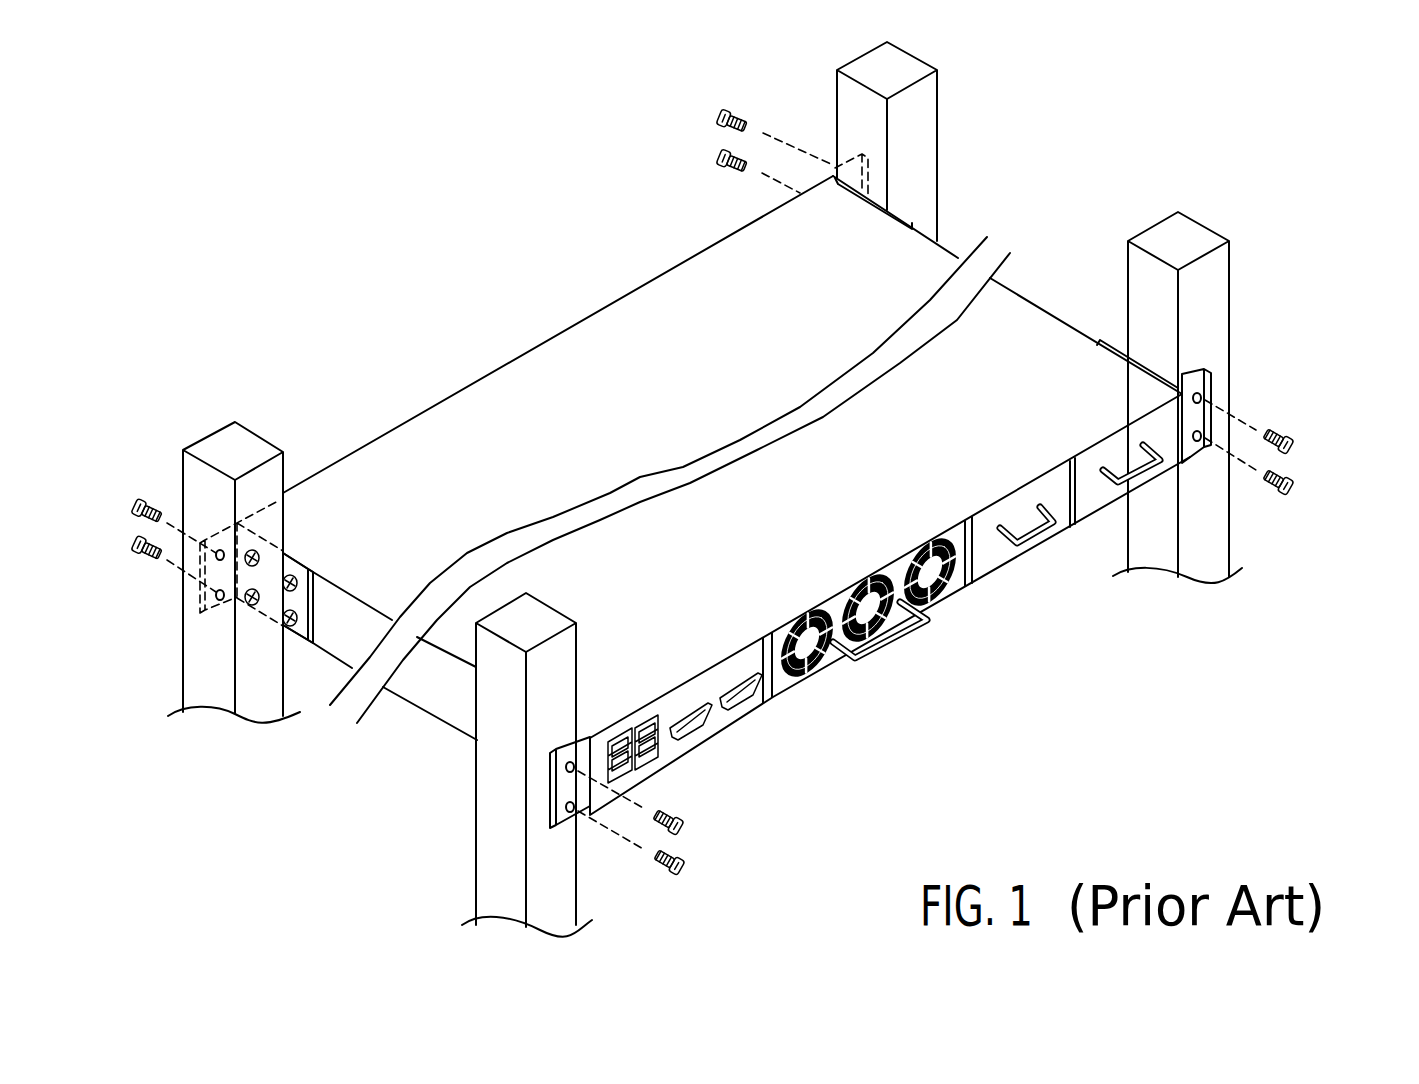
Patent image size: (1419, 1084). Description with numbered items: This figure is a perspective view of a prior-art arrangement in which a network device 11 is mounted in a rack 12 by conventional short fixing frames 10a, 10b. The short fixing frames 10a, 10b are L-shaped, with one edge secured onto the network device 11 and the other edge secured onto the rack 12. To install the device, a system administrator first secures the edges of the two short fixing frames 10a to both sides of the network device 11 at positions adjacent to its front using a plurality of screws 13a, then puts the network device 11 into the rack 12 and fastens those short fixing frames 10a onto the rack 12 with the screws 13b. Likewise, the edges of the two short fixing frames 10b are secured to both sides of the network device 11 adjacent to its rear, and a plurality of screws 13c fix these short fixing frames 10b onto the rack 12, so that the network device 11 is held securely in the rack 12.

The short fixing frame 10a is at (890, 212).
The short fixing frame 10b is at (1157, 365).
The network device 11 is at (537, 372).
The rack 12 is at (918, 105).
The screws 13a is at (288, 628).
The screws 13b is at (722, 160).
The screws 13c is at (680, 862).